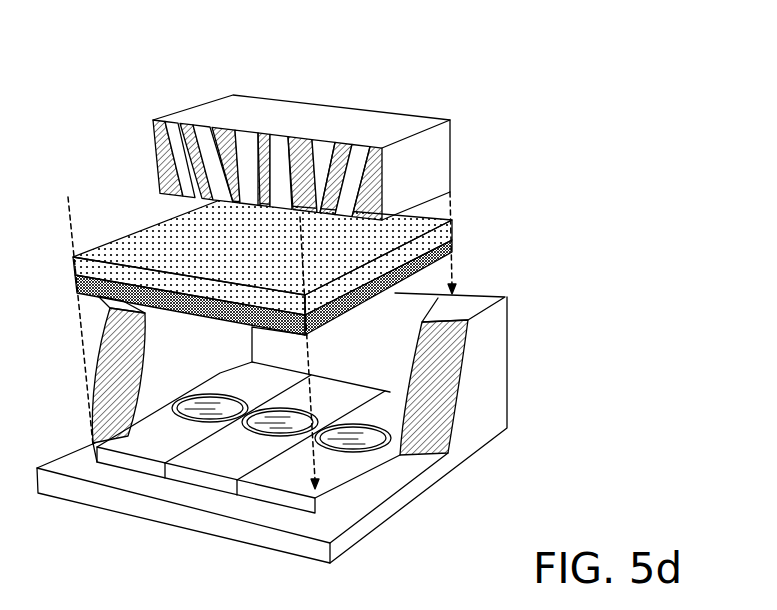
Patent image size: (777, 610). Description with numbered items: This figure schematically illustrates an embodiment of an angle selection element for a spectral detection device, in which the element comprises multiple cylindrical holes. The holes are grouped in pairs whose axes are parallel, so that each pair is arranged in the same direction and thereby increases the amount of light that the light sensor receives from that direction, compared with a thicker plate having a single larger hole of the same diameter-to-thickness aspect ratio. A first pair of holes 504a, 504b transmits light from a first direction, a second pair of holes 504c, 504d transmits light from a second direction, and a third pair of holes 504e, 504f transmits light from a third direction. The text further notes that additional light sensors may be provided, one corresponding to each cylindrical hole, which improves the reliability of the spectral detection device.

The hole of first pair of holes 504a is at (170, 130).
The hole of first pair of holes 504b is at (203, 132).
The hole of second pair of holes 504c is at (247, 143).
The hole of second pair of holes 504d is at (277, 144).
The hole of third pair of holes 504e is at (320, 148).
The hole of third pair of holes 504f is at (363, 148).